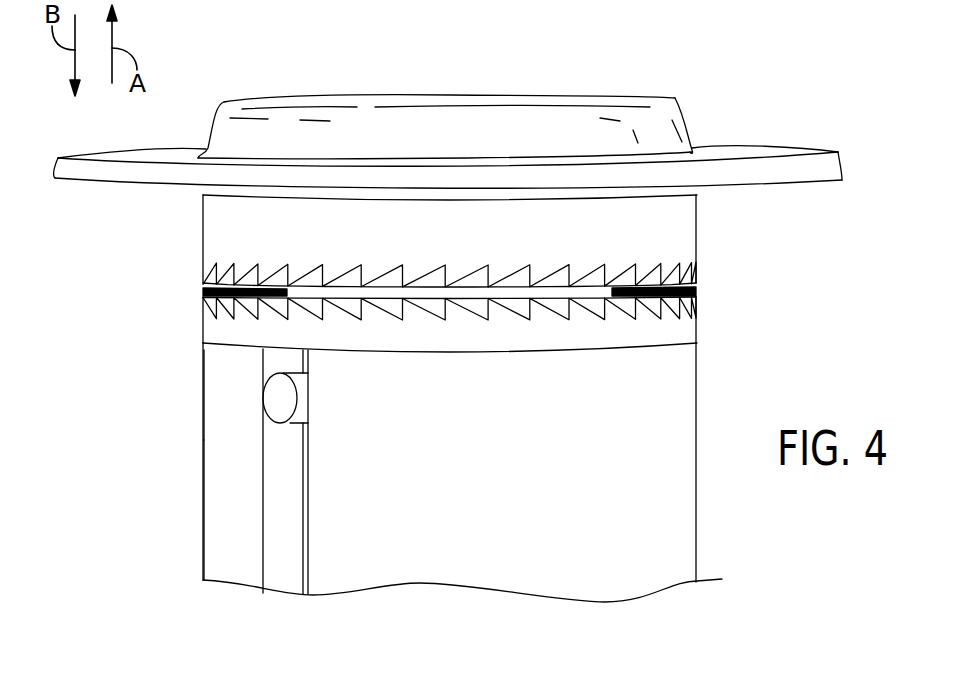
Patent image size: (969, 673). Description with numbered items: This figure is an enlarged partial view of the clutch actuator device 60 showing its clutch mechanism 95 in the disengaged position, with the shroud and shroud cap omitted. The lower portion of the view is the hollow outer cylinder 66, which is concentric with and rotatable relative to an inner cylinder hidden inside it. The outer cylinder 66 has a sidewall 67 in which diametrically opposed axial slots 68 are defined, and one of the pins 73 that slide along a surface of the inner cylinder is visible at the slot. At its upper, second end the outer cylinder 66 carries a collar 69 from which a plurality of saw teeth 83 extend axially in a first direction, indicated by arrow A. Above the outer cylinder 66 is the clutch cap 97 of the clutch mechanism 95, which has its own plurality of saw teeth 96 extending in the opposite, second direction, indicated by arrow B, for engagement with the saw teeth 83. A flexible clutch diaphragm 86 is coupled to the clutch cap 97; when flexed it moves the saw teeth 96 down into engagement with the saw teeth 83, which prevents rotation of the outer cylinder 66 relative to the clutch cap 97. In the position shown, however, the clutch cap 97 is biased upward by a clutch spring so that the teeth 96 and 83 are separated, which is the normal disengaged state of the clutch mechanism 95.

The clutch actuator device 60 is at (160, 476).
The outer cylinder 66 is at (213, 445).
The sidewall 67 is at (218, 528).
The axial slots 68 is at (290, 527).
The collar 69 is at (487, 340).
The pins 73 is at (277, 390).
The saw teeth 83 is at (432, 310).
The clutch diaphragm 86 is at (653, 103).
The clutch mechanism 95 is at (833, 199).
The saw teeth 96 is at (423, 272).
The clutch cap 97 is at (682, 232).